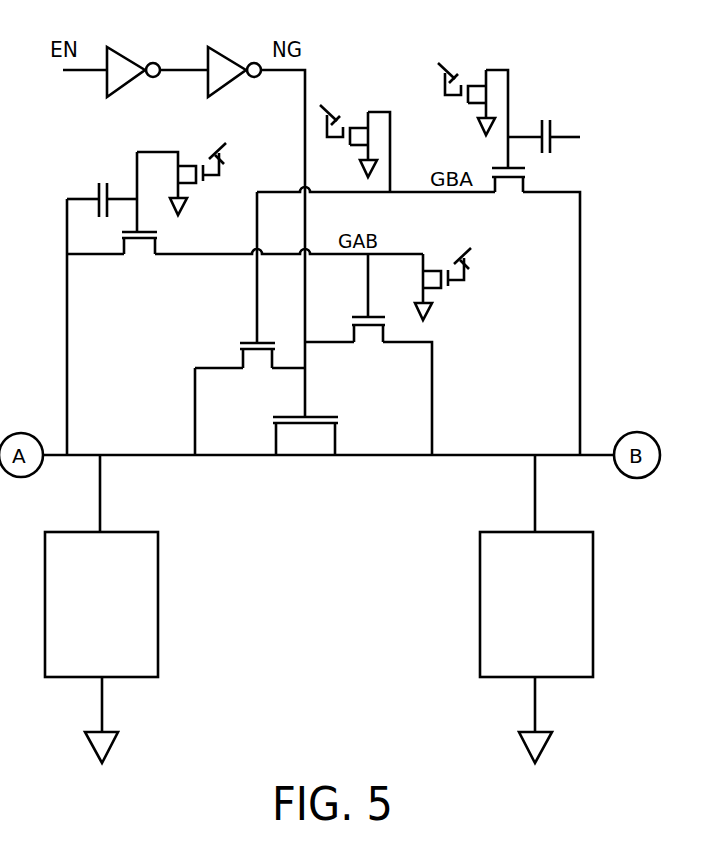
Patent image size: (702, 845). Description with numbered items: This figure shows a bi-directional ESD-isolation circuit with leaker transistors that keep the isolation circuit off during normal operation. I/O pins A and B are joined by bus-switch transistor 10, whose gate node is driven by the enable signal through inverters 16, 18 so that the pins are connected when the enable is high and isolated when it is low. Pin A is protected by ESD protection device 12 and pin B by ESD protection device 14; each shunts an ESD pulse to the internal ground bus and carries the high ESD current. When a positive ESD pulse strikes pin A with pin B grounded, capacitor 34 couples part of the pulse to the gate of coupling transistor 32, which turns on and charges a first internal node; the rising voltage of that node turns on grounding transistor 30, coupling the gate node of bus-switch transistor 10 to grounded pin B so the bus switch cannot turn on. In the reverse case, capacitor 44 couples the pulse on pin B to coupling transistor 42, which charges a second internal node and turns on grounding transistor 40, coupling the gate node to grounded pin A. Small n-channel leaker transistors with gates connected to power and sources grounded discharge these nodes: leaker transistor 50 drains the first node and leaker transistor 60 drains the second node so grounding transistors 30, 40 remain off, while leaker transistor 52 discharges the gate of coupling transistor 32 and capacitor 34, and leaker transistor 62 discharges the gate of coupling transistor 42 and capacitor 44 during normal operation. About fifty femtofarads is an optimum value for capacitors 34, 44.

The bus-switch transistor 10 is at (306, 430).
The ESD protection device 12 is at (141, 580).
The ESD protection device 14 is at (576, 580).
The inverter 16 is at (121, 54).
The inverter 18 is at (216, 54).
The grounding transistor 30 is at (370, 333).
The coupling transistor 32 is at (140, 245).
The capacitor 34 is at (95, 192).
The grounding transistor 40 is at (256, 357).
The coupling transistor 42 is at (510, 182).
The capacitor 44 is at (553, 127).
The leaker transistor 50 is at (436, 287).
The leaker transistor 52 is at (193, 186).
The leaker transistor 60 is at (350, 112).
The leaker transistor 62 is at (467, 70).